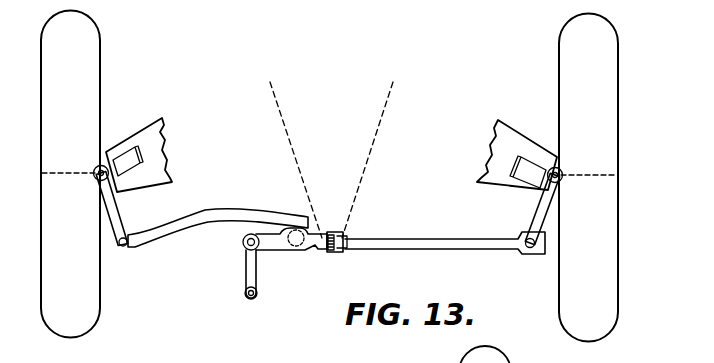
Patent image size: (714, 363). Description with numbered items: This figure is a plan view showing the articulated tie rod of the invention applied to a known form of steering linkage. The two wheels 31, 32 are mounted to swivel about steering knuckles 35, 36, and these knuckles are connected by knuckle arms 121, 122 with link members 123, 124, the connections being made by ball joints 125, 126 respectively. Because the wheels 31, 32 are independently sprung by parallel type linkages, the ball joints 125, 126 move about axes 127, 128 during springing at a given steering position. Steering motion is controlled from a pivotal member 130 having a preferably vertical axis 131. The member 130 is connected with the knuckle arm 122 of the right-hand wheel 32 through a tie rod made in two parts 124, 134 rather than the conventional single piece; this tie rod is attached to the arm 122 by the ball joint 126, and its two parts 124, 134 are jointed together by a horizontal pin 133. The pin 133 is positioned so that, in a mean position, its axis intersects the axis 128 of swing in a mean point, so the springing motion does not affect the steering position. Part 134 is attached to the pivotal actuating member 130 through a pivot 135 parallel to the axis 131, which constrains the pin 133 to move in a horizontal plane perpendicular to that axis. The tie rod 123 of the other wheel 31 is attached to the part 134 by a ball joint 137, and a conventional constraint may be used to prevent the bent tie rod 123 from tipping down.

The wheel 31 is at (82, 65).
The wheel 32 is at (600, 68).
The steering knuckle 35 is at (98, 179).
The steering knuckle 36 is at (560, 170).
The knuckle arm 121 is at (114, 210).
The knuckle arm 122 is at (540, 209).
The tie rod 123 is at (204, 212).
The tie rod part 124 is at (454, 238).
The ball joint 125 is at (125, 250).
The ball joint 126 is at (531, 248).
The axis 127 is at (297, 147).
The axis 128 is at (373, 145).
The pivotal member 130 is at (255, 272).
The axis 131 is at (251, 300).
The horizontal pin 133 is at (352, 236).
The tie rod part 134 is at (303, 250).
The pivot 135 is at (246, 243).
The ball joint 137 is at (282, 250).